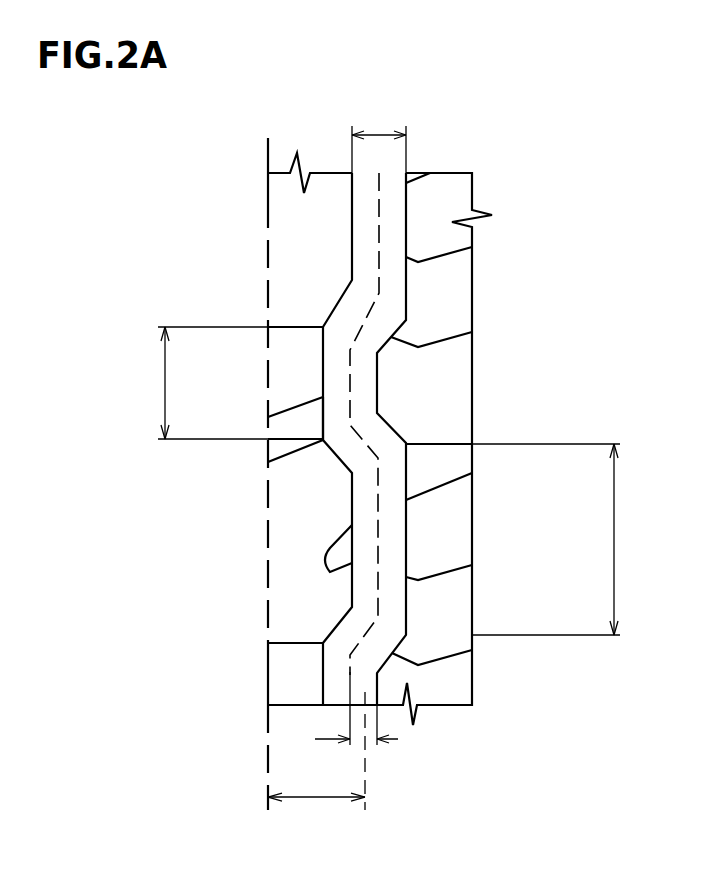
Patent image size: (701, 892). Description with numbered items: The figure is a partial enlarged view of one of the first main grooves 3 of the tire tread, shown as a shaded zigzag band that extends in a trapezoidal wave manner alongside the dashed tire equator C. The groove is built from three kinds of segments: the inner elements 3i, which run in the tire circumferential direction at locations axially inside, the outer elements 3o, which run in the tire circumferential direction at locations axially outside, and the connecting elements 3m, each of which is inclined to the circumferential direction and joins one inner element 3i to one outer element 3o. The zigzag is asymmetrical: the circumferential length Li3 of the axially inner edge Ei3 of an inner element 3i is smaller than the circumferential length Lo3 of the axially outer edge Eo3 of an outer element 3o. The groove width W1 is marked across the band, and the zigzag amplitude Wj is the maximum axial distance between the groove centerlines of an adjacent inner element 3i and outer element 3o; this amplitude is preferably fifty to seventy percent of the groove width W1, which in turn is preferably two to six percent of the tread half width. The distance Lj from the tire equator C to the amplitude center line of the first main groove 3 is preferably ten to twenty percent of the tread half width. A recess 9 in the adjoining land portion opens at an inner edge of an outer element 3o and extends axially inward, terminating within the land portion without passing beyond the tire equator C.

The first main groove 3 is at (390, 283).
The inner element 3i is at (365, 380).
The connecting element 3m is at (380, 437).
The outer element 3o is at (392, 520).
The recess 9 is at (340, 553).
The tire equator C is at (266, 127).
The groove width W1 is at (379, 135).
The zigzag amplitude Wj is at (372, 741).
The distance from tire equator to amplitude center line Lj is at (316, 763).
The circumferential length of inner edge Li3 is at (191, 383).
The circumferential length of outer edge Lo3 is at (572, 539).
The inner edge Ei3 is at (322, 368).
The outer edge Eo3 is at (406, 540).